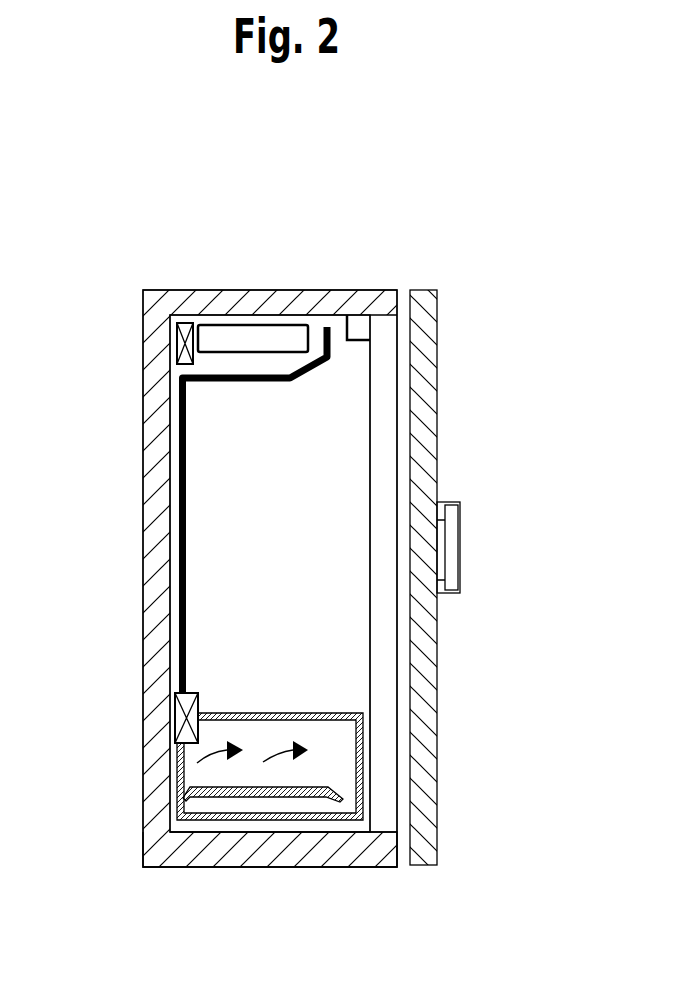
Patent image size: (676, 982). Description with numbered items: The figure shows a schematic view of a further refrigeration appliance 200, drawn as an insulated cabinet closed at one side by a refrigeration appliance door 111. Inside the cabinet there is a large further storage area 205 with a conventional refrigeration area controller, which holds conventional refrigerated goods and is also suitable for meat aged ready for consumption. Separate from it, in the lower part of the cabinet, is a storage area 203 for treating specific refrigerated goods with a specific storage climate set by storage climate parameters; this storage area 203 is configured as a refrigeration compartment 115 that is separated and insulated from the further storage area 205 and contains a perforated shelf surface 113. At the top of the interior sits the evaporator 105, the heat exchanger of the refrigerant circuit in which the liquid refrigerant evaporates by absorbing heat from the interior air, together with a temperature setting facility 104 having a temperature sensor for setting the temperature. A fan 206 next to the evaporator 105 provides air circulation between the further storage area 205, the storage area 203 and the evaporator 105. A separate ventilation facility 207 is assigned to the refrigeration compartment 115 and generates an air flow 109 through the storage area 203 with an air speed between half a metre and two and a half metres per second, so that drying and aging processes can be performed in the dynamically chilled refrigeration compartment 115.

The refrigeration appliance 200 is at (122, 292).
The further storage area 205 is at (320, 445).
The refrigeration compartment 115 is at (303, 822).
The fan 206 is at (188, 323).
The evaporator 105 is at (293, 335).
The temperature setting facility 104 is at (360, 330).
The refrigeration appliance door 111 is at (423, 479).
The storage area 203 is at (333, 748).
The ventilation facility 207 is at (178, 715).
The air flow 109 is at (200, 752).
The perforated shelf surface 113 is at (327, 789).